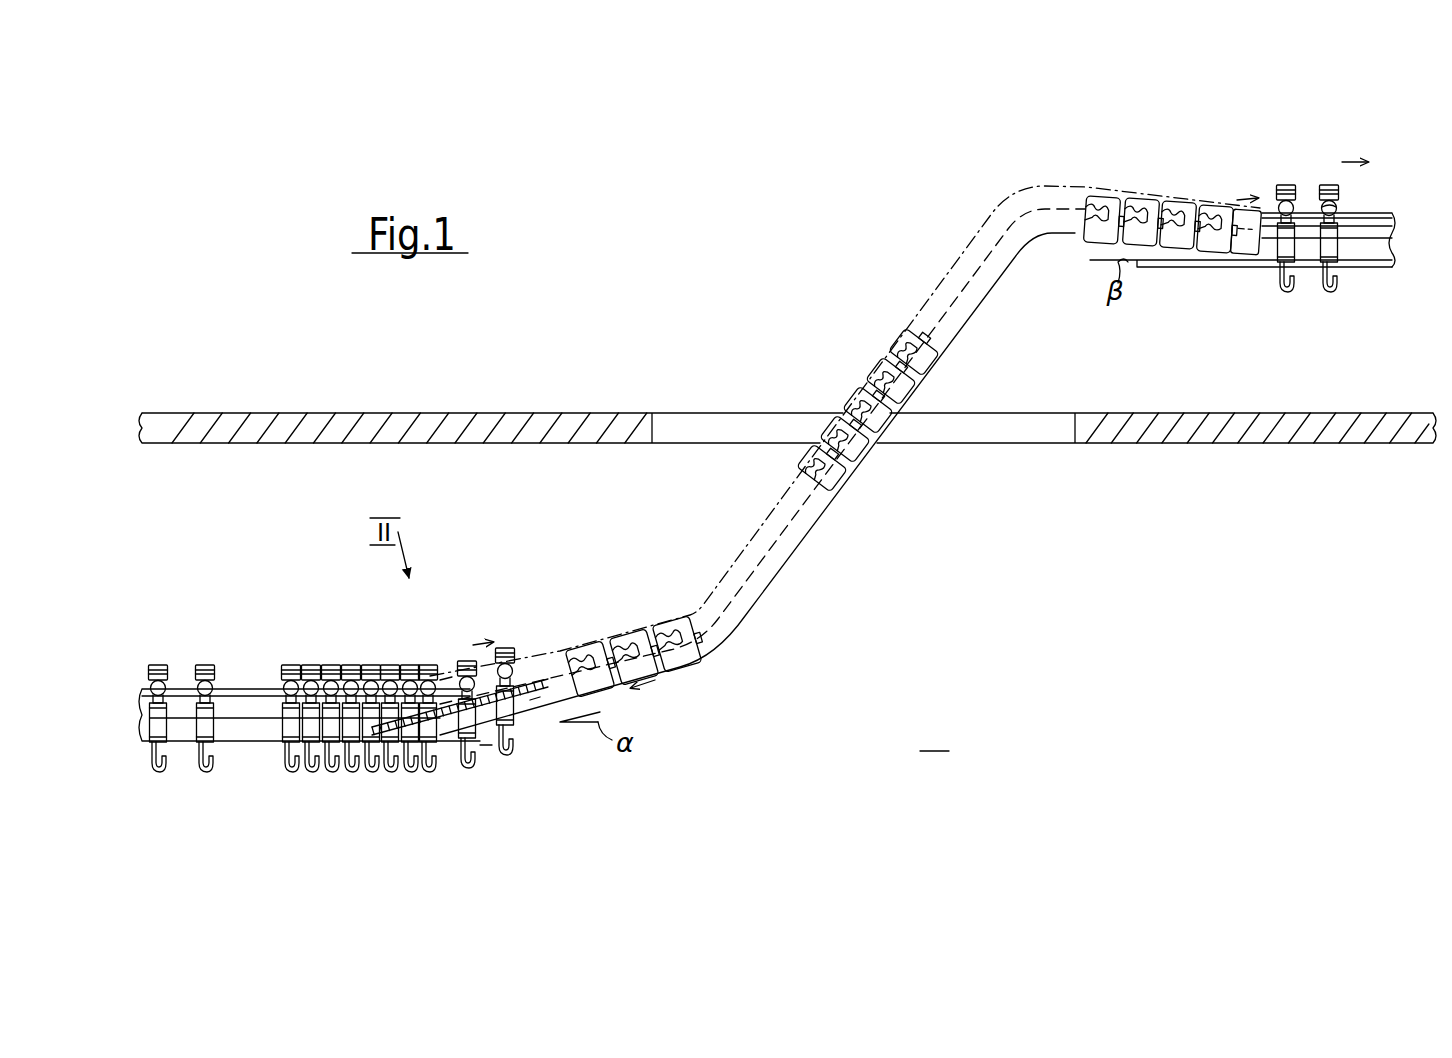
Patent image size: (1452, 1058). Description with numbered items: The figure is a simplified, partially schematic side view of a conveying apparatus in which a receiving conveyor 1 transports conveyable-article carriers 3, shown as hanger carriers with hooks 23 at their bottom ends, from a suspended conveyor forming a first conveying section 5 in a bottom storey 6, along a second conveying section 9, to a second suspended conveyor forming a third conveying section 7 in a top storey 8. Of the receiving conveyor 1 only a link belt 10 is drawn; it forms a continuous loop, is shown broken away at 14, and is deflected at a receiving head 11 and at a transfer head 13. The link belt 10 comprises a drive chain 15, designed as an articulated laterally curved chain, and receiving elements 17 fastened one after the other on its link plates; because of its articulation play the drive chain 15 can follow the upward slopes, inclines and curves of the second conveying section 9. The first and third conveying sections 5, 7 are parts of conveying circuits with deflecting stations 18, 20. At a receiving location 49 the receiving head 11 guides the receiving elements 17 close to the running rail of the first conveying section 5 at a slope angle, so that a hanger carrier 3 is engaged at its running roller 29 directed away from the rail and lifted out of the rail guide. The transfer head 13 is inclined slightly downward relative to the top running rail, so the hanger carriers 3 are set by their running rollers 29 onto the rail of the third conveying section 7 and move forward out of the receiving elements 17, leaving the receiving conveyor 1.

The receiving conveyor 1 is at (870, 464).
The conveyable-article carrier 3 is at (210, 660).
The first conveying section 5 is at (238, 742).
The bottom storey 6 is at (934, 735).
The third conveying section 7 is at (1382, 262).
The top storey 8 is at (796, 206).
The second conveying section 9 is at (555, 622).
The link belt 10 is at (830, 590).
The receiving head 11 is at (446, 662).
The transfer head 13 is at (1182, 197).
The broken-away state of the link belt 14 is at (552, 715).
The drive chain 15 is at (538, 702).
The receiving element 17 is at (905, 345).
The deflecting station 18 is at (486, 747).
The deflecting station 20 is at (1190, 268).
The hook 23 is at (312, 780).
The running roller 29 is at (1334, 210).
The receiving location 49 is at (408, 660).